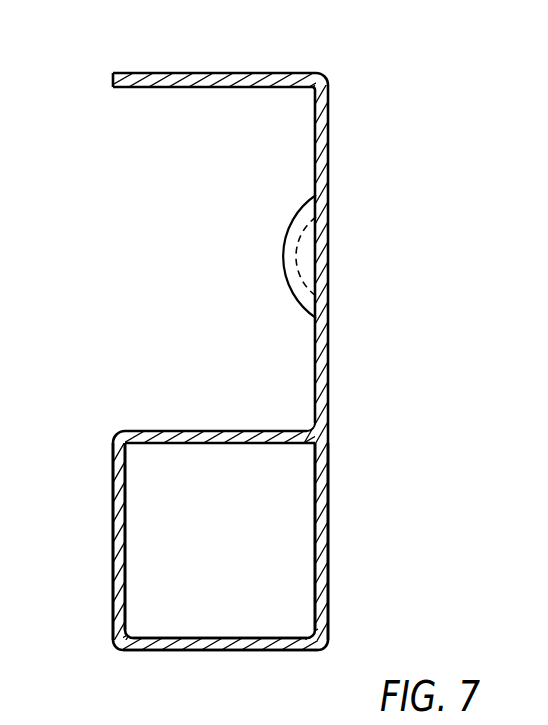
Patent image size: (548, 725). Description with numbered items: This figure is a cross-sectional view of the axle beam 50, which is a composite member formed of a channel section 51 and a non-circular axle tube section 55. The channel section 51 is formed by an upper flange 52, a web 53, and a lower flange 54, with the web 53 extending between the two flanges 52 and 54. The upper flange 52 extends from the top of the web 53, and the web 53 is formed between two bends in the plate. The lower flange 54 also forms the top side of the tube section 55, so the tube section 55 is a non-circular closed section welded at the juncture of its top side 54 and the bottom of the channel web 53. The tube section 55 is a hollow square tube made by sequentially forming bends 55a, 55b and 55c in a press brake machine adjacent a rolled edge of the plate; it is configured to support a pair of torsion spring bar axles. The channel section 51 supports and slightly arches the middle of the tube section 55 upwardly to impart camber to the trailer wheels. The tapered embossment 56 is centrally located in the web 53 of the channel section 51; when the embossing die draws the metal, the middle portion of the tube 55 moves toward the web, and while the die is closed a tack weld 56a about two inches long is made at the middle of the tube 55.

The axle beam 50 is at (330, 70).
The channel section 51 is at (199, 271).
The upper flange 52 is at (258, 35).
The web 53 is at (322, 263).
The lower flange 54 is at (220, 434).
The axle tube section 55 is at (109, 549).
The bend 55a is at (315, 636).
The bend 55b is at (196, 612).
The bend 55c is at (128, 447).
The tapered embossment 56 is at (293, 236).
The tack weld 56a is at (312, 426).